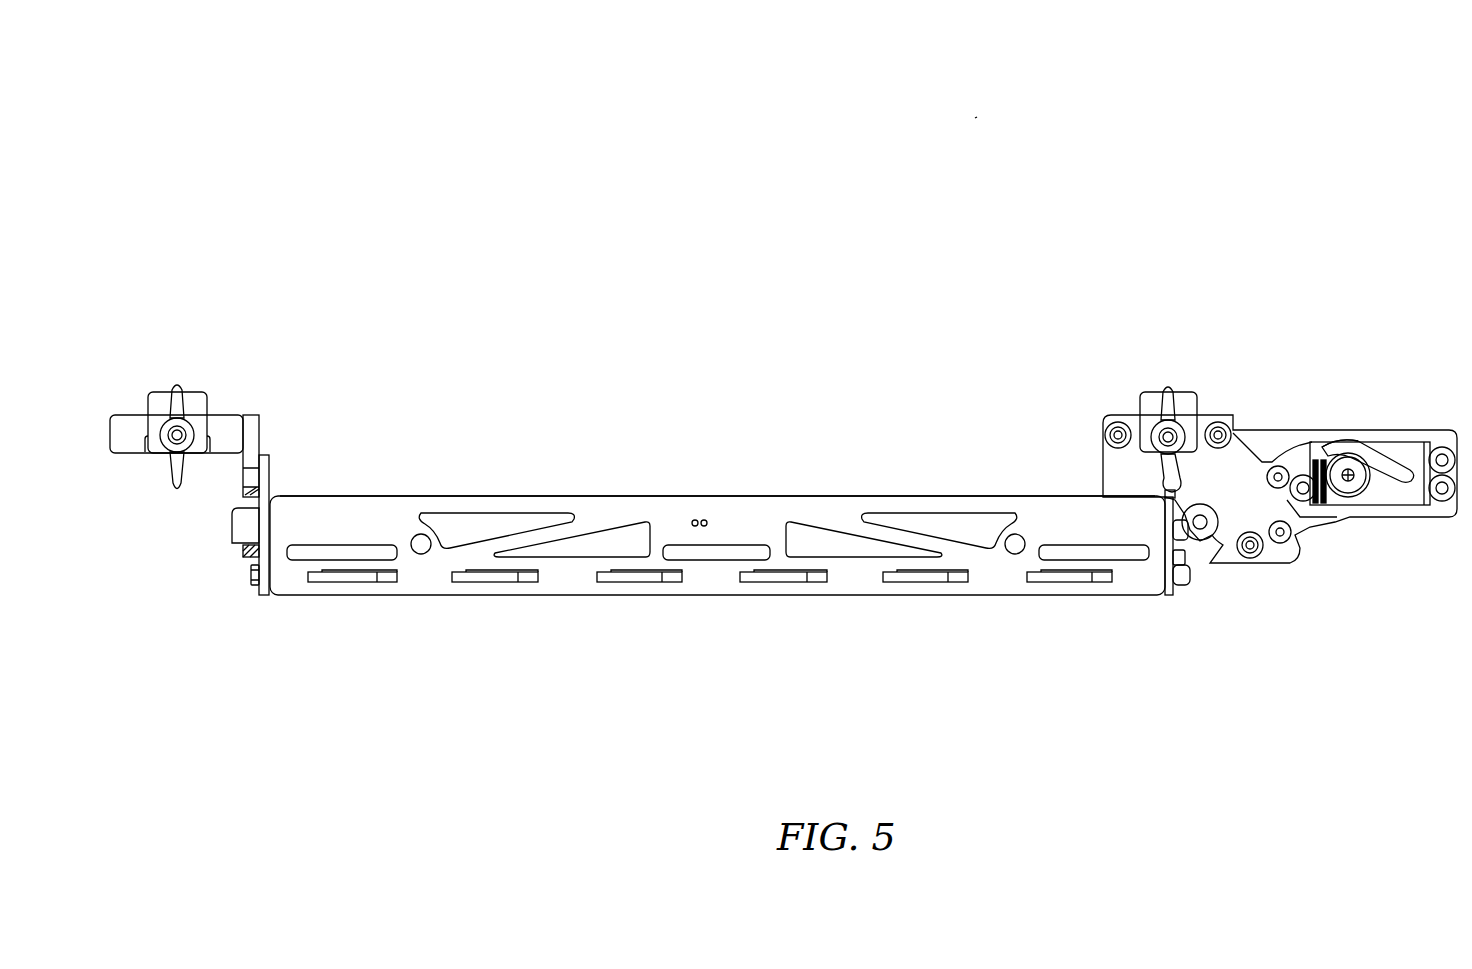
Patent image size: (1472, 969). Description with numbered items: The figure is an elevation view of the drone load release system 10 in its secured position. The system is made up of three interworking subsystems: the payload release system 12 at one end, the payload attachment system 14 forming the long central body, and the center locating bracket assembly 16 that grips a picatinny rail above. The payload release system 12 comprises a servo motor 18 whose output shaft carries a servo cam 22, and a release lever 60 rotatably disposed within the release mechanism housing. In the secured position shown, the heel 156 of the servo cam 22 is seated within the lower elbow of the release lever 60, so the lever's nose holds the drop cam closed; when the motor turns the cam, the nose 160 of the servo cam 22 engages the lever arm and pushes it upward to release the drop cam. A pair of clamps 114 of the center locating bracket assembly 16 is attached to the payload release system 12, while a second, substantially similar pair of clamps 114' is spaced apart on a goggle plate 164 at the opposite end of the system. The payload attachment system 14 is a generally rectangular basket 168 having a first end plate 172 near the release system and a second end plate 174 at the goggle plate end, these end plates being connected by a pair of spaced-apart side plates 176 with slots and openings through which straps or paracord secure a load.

The drone load release system 10 is at (977, 115).
The payload release system 12 is at (1280, 418).
The payload attachment system 14 is at (508, 600).
The center locating bracket assembly 16 is at (200, 385).
The servo motor 18 is at (1403, 458).
The servo cam 22 is at (1357, 488).
The release lever 60 is at (1347, 442).
The clamps 114 is at (1119, 401).
The clamps 114' is at (165, 381).
The heel 156 is at (1328, 447).
The nose 160 is at (1347, 503).
The goggle plate 164 is at (260, 433).
The basket 168 is at (736, 500).
The first end plate 172 is at (1175, 577).
The second end plate 174 is at (251, 575).
The side plates 176 is at (349, 503).